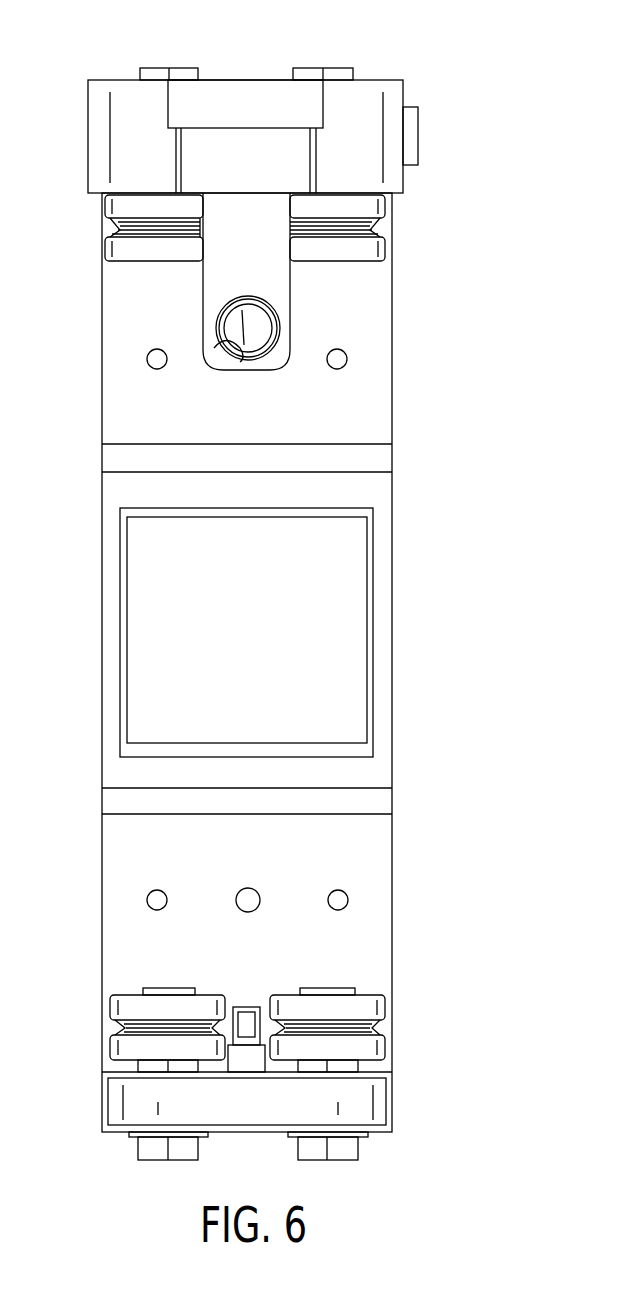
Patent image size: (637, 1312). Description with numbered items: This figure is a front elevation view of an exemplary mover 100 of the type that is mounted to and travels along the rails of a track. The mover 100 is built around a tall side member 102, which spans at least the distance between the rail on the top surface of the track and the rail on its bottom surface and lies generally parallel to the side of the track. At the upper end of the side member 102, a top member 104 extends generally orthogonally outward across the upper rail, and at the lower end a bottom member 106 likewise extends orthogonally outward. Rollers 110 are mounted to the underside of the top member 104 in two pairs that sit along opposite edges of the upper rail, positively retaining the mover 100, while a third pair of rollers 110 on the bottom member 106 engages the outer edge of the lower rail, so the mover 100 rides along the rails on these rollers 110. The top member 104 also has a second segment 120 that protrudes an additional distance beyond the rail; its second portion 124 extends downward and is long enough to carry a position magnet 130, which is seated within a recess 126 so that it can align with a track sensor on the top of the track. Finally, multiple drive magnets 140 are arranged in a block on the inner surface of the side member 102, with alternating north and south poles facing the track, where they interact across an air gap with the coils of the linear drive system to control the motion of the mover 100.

The mover 100 is at (418, 41).
The side member 102 is at (368, 333).
The top member 104 is at (108, 80).
The bottom member 106 is at (393, 1100).
The rollers 110 is at (107, 250).
The second segment 120 is at (235, 97).
The second portion 124 is at (238, 270).
The recess 126 is at (214, 348).
The position magnet 130 is at (258, 325).
The drive magnets 140 is at (322, 628).